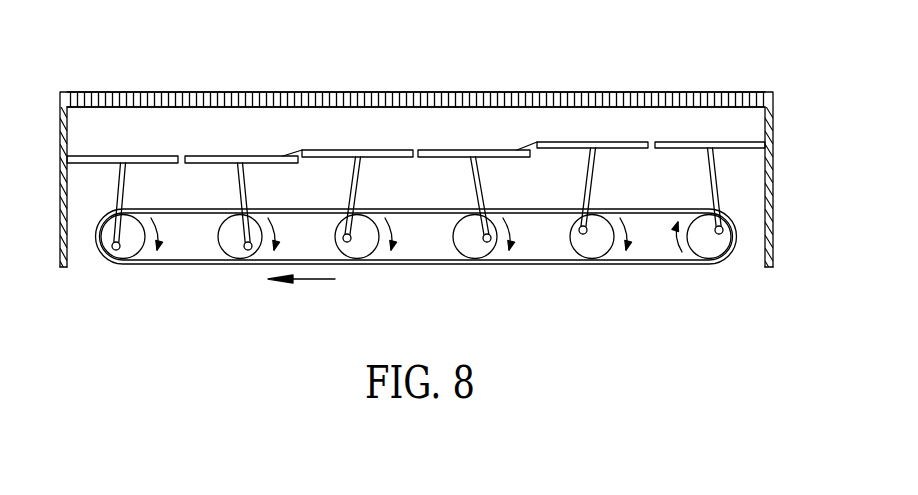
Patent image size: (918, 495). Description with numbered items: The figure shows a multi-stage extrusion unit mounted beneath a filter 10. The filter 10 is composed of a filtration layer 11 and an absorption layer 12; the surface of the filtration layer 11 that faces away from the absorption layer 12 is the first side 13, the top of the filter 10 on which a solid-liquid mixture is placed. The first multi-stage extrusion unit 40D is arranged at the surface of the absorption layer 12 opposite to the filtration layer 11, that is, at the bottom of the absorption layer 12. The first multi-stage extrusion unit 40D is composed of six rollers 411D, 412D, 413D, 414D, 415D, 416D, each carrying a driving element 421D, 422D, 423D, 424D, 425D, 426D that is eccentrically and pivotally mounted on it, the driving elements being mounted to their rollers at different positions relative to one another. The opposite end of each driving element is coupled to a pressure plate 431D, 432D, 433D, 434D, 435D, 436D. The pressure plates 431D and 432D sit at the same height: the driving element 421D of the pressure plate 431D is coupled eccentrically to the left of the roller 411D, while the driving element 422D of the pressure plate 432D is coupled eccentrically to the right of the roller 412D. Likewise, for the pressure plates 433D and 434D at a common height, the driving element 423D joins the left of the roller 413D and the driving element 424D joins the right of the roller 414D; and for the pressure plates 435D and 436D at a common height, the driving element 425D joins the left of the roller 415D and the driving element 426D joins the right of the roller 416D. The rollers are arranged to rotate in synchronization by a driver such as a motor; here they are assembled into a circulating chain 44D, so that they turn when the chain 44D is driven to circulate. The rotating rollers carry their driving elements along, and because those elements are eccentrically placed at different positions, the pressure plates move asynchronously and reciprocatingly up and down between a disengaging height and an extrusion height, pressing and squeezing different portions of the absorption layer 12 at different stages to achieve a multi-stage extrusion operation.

The filter 10 is at (620, 92).
The filtration layer 11 is at (347, 102).
The absorption layer 12 is at (428, 120).
The first side 13 is at (262, 92).
The first multi-stage extrusion unit 40D is at (265, 323).
The circulating chain 44D is at (547, 260).
The roller 411D is at (130, 245).
The roller 412D is at (230, 247).
The roller 413D is at (363, 245).
The roller 414D is at (467, 245).
The roller 415D is at (603, 245).
The roller 416D is at (705, 245).
The driving element 421D is at (124, 185).
The driving element 422D is at (245, 185).
The driving element 423D is at (357, 186).
The driving element 424D is at (481, 186).
The driving element 425D is at (591, 187).
The driving element 426D is at (716, 180).
The pressure plate 431D is at (93, 157).
The pressure plate 432D is at (207, 157).
The pressure plate 433D is at (323, 150).
The pressure plate 434D is at (438, 150).
The pressure plate 435D is at (567, 142).
The pressure plate 436D is at (672, 142).